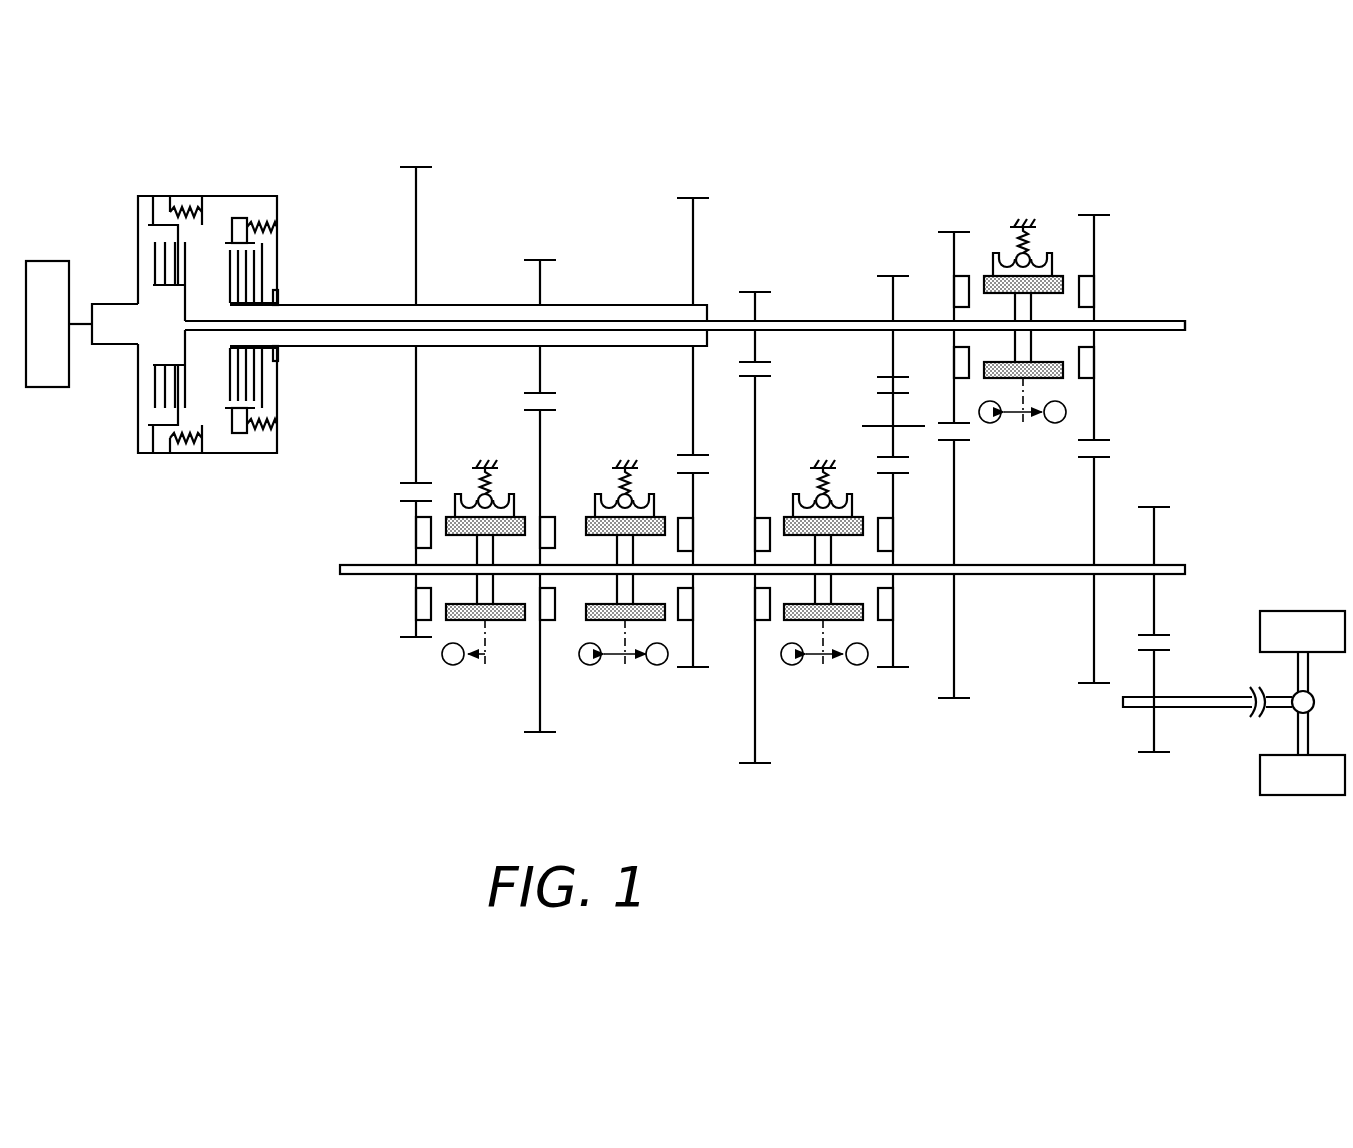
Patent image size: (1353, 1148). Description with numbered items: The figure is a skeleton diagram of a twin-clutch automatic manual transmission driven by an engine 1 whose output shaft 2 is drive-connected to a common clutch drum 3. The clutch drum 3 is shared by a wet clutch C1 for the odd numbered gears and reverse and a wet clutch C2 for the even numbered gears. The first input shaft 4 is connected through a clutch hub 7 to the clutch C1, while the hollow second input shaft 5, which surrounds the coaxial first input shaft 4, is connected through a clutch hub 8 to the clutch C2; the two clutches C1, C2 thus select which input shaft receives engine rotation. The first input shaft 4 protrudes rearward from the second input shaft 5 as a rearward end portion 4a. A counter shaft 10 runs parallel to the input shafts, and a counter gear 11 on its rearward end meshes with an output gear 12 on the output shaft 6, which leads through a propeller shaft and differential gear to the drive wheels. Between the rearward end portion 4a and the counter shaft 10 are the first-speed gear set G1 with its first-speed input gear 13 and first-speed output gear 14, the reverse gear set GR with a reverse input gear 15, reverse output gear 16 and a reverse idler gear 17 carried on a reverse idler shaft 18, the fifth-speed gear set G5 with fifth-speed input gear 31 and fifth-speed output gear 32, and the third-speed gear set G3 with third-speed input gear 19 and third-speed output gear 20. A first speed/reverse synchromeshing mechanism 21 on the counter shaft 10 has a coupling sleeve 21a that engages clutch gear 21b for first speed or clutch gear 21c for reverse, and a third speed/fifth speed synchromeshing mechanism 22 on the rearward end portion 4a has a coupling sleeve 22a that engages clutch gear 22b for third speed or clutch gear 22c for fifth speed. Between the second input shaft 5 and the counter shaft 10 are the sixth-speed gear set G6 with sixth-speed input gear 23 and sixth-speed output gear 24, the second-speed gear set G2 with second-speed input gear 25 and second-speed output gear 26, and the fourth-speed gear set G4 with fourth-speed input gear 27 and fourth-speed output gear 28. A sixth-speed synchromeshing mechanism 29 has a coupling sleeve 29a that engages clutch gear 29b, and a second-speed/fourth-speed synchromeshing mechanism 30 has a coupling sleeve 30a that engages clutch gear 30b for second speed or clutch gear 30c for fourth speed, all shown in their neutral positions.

The engine 1 is at (50, 261).
The output shaft 2 is at (80, 321).
The common clutch drum 3 is at (213, 196).
The first input shaft 4 is at (326, 312).
The rearward end portion 4a is at (1158, 320).
The second input shaft 5 is at (361, 303).
The output shaft 6 is at (1217, 708).
The clutch hub 7 is at (161, 290).
The clutch hub 8 is at (250, 303).
The counter shaft 10 is at (347, 575).
The counter gear 11 is at (1157, 505).
The output gear 12 is at (1146, 753).
The first-speed input gear 13 is at (750, 290).
The first-speed output gear 14 is at (760, 765).
The reverse input gear 15 is at (887, 274).
The reverse output gear 16 is at (898, 670).
The reverse idler gear 17 is at (882, 392).
The reverse idler shaft 18 is at (873, 426).
The third-speed input gear 19 is at (1103, 212).
The third-speed output gear 20 is at (1088, 685).
The first speed/reverse synchromeshing mechanism 21 is at (815, 569).
The coupling sleeve 21a is at (786, 621).
The clutch gear 21b is at (758, 606).
The clutch gear 21c is at (890, 605).
The third speed/fifth speed synchromeshing mechanism 22 is at (1033, 330).
The coupling sleeve 22a is at (1047, 380).
The clutch gear 22b is at (1090, 360).
The clutch gear 22c is at (961, 378).
The sixth-speed input gear 23 is at (410, 165).
The sixth-speed output gear 24 is at (410, 638).
The second-speed input gear 25 is at (532, 258).
The second-speed output gear 26 is at (542, 734).
The fourth-speed input gear 27 is at (688, 196).
The fourth-speed output gear 28 is at (691, 670).
The sixth-speed synchromeshing mechanism 29 is at (468, 564).
The coupling sleeve 29a is at (447, 621).
The clutch gear 29b is at (416, 604).
The second-speed/fourth-speed synchromeshing mechanism 30 is at (610, 564).
The coupling sleeve 30a is at (587, 621).
The clutch gear 30b is at (547, 606).
The clutch gear 30c is at (688, 622).
The fifth-speed input gear 31 is at (950, 228).
The fifth-speed output gear 32 is at (952, 700).
The wet clutch C1 is at (148, 404).
The wet clutch C2 is at (266, 404).
The first-speed gear set G1 is at (760, 519).
The second-speed gear set G2 is at (544, 490).
The third-speed gear set G3 is at (1093, 426).
The fourth-speed gear set G4 is at (697, 442).
The fifth-speed gear set G5 is at (961, 460).
The sixth-speed gear set G6 is at (422, 393).
The reverse gear set GR is at (868, 460).